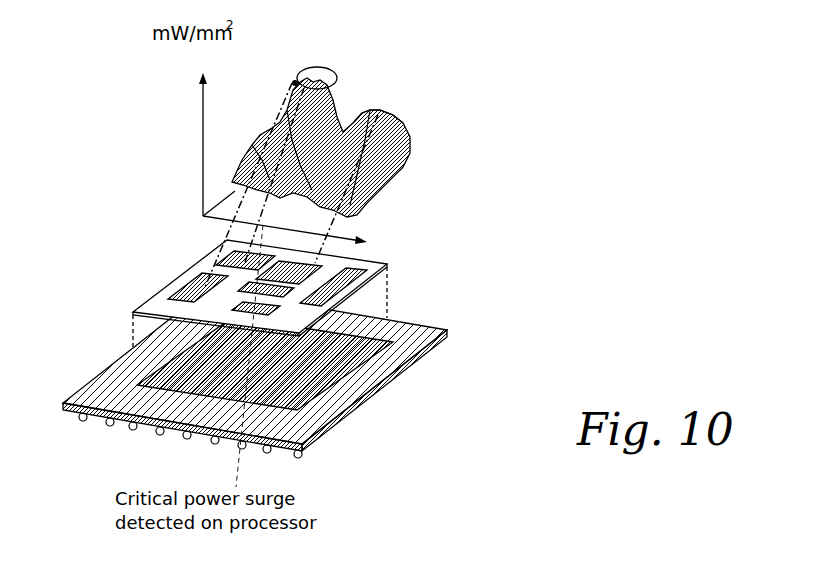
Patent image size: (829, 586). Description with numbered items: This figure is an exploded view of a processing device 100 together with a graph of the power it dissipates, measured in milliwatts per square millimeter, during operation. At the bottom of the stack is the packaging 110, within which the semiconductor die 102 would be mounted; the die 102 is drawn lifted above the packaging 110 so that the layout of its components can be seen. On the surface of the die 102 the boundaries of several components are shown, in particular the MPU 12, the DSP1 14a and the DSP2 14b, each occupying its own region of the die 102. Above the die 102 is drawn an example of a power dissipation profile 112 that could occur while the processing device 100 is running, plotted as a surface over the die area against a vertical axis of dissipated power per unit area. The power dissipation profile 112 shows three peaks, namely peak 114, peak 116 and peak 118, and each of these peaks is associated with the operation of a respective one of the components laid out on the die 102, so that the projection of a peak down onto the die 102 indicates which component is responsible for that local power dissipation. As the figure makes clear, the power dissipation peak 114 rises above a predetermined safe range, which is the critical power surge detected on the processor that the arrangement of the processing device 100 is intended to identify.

The processing device 100 is at (522, 333).
The semiconductor die 102 is at (373, 279).
The packaging 110 is at (119, 366).
The power dissipation profile 112 is at (450, 162).
The power dissipation peak 114 is at (329, 80).
The power dissipation peak 116 is at (373, 110).
The power dissipation peak 118 is at (273, 117).
The MPU 12 is at (226, 261).
The DSP1 14a is at (320, 268).
The DSP2 14b is at (192, 287).